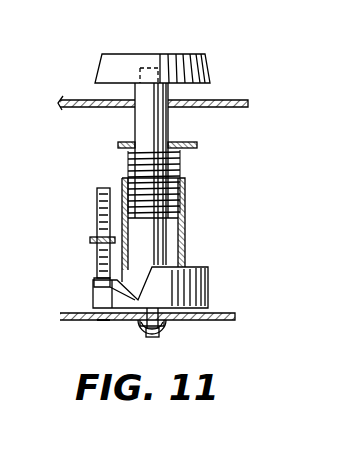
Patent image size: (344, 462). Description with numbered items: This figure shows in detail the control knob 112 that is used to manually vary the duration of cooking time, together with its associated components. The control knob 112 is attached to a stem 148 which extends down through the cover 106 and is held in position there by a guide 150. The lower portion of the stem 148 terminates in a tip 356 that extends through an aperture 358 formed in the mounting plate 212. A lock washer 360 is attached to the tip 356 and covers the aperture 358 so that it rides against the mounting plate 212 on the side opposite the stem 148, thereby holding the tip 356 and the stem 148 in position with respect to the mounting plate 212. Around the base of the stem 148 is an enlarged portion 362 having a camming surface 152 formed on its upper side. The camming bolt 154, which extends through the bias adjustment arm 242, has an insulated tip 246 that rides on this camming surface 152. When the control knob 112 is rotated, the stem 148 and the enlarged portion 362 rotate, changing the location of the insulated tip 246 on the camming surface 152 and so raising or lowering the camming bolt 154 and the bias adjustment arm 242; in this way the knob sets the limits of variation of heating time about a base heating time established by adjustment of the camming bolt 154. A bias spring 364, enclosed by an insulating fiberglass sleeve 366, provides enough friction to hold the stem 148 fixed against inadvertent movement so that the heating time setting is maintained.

The control knob 112 is at (190, 55).
The cover 106 is at (236, 98).
The stem 148 is at (157, 136).
The guide 150 is at (197, 146).
The bias spring 364 is at (183, 167).
The insulating fiberglass sleeve 366 is at (185, 206).
The enlarged portion 362 is at (210, 266).
The mounting plate 212 is at (226, 314).
The camming bolt 154 is at (97, 197).
The bias adjustment arm 242 is at (94, 237).
The insulated tip 246 is at (95, 284).
The camming surface 152 is at (98, 319).
The tip 356 is at (142, 323).
The lock washer 360 is at (157, 334).
The aperture 358 is at (170, 322).